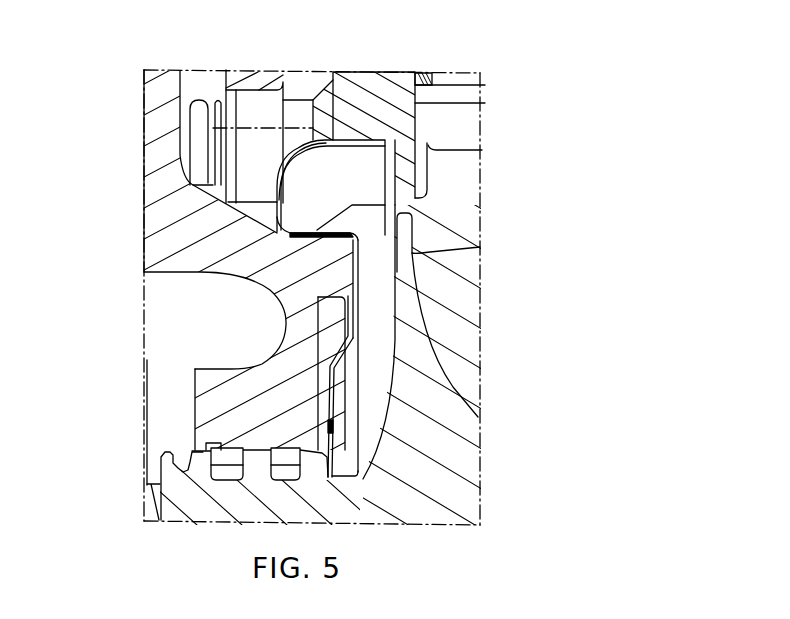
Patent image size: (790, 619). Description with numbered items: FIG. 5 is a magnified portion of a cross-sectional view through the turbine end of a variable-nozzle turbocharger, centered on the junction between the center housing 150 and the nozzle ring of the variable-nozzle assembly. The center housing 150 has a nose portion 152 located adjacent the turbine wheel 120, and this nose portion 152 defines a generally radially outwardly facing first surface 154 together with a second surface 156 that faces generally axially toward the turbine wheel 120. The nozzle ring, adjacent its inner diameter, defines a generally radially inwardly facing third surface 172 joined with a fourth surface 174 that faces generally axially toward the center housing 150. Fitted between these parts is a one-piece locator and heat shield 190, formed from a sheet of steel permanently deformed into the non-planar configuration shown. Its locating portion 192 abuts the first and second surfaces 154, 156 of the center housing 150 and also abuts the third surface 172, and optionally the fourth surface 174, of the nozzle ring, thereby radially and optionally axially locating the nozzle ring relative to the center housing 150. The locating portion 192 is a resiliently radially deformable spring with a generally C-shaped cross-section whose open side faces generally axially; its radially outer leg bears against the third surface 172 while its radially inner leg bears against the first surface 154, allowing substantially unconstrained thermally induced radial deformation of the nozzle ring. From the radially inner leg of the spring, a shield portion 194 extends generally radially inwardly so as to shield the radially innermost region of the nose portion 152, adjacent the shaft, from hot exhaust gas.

The turbine wheel 120 is at (457, 407).
The center housing 150 is at (163, 240).
The nose portion 152 is at (285, 307).
The first surface 154 is at (385, 203).
The second surface 156 is at (368, 262).
The third surface 172 is at (353, 160).
The fourth surface 174 is at (385, 157).
The locator and heat shield 190 is at (277, 183).
The locating portion 192 is at (298, 155).
The shield portion 194 is at (341, 364).